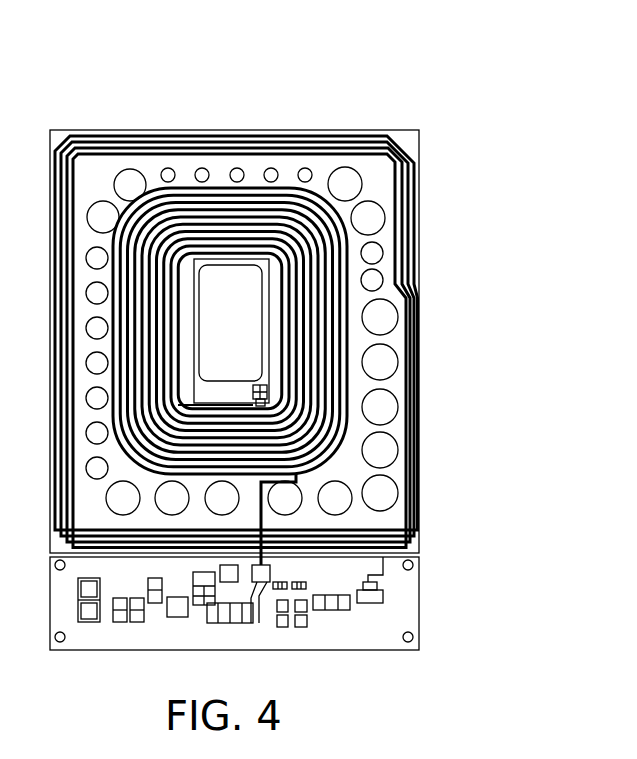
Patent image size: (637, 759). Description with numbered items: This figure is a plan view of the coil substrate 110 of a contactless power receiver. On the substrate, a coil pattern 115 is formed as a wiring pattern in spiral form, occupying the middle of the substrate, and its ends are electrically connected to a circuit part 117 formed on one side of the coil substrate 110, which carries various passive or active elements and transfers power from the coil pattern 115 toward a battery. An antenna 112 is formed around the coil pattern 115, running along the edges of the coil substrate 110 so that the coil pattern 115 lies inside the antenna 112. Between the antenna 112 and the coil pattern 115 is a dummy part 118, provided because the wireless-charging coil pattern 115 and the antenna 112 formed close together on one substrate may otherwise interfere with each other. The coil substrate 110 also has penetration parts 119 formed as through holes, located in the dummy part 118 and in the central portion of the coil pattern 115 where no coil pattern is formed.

The coil substrate 110 is at (266, 95).
The antenna 112 is at (407, 212).
The coil pattern 115 is at (283, 190).
The circuit part 117 is at (403, 603).
The dummy part 118 is at (398, 523).
The penetration parts 119 is at (233, 322).